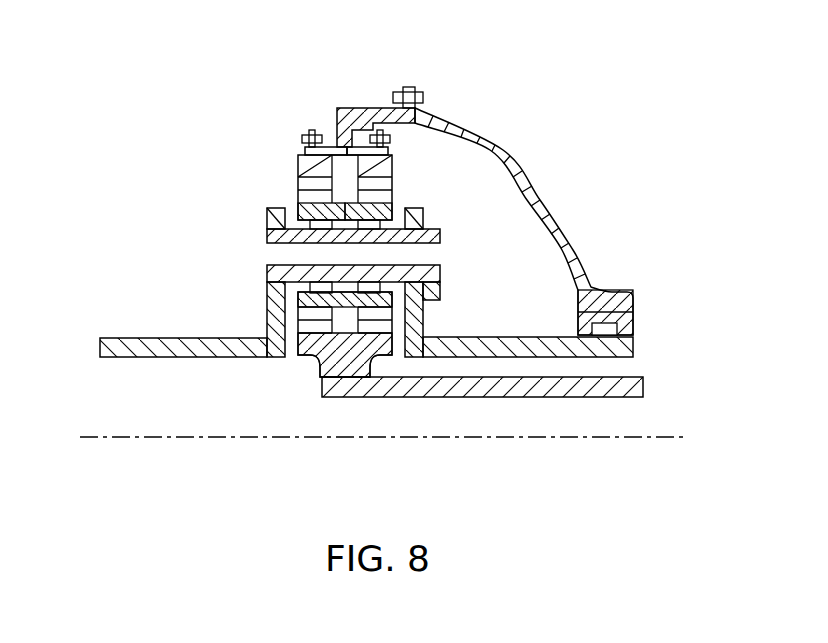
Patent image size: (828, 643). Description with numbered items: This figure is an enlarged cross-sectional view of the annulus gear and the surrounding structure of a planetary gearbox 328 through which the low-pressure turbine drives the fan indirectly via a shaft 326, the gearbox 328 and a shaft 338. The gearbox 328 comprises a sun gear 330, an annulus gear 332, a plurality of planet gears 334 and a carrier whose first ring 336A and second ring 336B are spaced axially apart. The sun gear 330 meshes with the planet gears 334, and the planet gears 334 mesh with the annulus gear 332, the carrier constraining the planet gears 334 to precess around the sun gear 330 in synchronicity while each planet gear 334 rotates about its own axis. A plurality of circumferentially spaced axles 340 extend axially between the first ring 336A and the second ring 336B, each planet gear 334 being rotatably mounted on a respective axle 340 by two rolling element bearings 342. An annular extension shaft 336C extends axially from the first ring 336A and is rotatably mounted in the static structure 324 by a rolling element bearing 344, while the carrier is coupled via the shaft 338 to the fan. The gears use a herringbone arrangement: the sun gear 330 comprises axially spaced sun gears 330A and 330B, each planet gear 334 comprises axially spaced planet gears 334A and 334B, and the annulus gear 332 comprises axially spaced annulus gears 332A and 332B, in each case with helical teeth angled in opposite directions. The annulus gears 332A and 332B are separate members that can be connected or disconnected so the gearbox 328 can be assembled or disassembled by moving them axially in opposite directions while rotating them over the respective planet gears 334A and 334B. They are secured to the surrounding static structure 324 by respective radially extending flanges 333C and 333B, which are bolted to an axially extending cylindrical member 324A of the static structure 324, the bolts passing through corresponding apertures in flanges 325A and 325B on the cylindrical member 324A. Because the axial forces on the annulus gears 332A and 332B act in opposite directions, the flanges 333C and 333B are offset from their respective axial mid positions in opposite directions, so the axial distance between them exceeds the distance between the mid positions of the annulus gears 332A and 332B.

The static structure 324 is at (500, 206).
The cylindrical member 324A is at (332, 153).
The flange 325A is at (316, 146).
The flange 325B is at (375, 146).
The shaft 326 is at (515, 390).
The gearbox 328 is at (224, 400).
The sun gear 330 is at (342, 350).
The sun gear 330A is at (313, 330).
The sun gear 330B is at (368, 330).
The annulus gear 332 is at (362, 157).
The annulus gear 332A is at (308, 170).
The annulus gear 332B is at (392, 172).
The radially extending member 333B is at (304, 152).
The radially extending member 333C is at (387, 152).
The planet gear 334 is at (399, 374).
The planet gear 334A is at (303, 198).
The planet gear 334B is at (392, 197).
The first ring 336A is at (413, 317).
The second ring 336B is at (270, 303).
The extension shaft 336C is at (550, 343).
The shaft 338 is at (135, 357).
The axle 340 is at (266, 234).
The bearing 342 is at (383, 282).
The rolling element bearing 344 is at (633, 327).